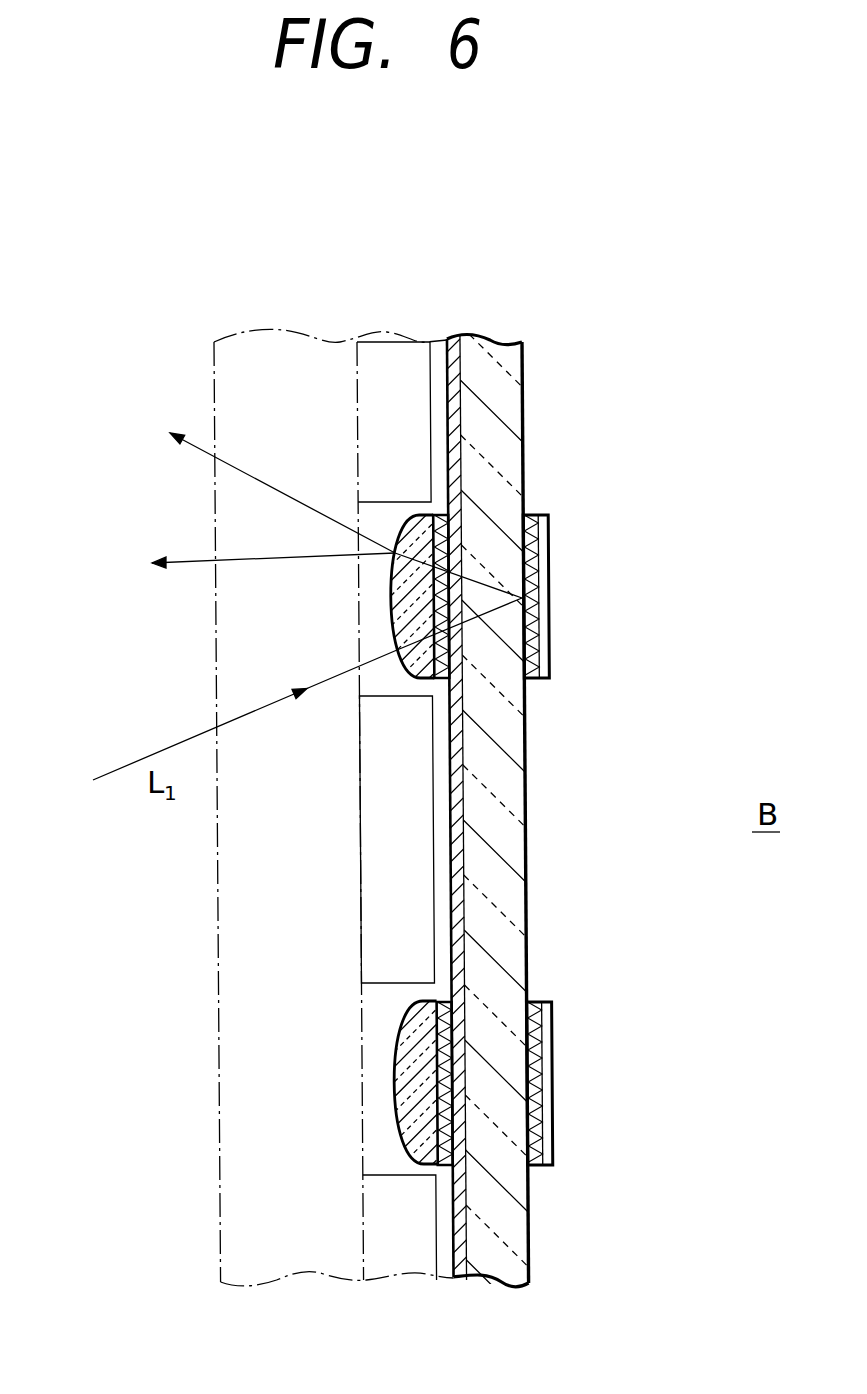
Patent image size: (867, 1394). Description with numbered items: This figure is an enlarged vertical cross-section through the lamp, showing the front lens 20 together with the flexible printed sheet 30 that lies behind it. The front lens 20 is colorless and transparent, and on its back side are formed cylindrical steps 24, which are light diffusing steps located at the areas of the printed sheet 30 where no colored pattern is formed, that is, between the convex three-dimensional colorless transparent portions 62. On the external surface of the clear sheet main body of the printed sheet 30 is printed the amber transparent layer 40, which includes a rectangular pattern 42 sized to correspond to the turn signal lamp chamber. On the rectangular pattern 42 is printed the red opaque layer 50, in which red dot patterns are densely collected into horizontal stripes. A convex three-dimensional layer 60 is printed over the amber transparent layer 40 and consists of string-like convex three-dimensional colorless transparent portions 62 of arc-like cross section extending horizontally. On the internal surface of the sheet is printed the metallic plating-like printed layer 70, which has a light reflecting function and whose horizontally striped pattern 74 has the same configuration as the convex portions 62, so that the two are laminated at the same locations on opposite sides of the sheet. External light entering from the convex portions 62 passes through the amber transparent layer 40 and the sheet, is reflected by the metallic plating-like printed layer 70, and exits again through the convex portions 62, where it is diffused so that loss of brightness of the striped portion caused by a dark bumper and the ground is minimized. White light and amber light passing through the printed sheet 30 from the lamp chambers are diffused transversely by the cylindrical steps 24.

The front lens 20 is at (215, 957).
The cylindrical steps 24 is at (429, 393).
The printed sheet 30 is at (497, 408).
The amber transparent layer 40 is at (567, 808).
The rectangular pattern 42 is at (462, 743).
The red opaque layer 50 is at (432, 616).
The convex three-dimensional layer 60 is at (261, 840).
The convex three-dimensional colorless transparent portions 62 is at (393, 599).
The metallic plating-like printed layer 70 is at (613, 840).
The horizontally striped pattern 74 is at (547, 537).